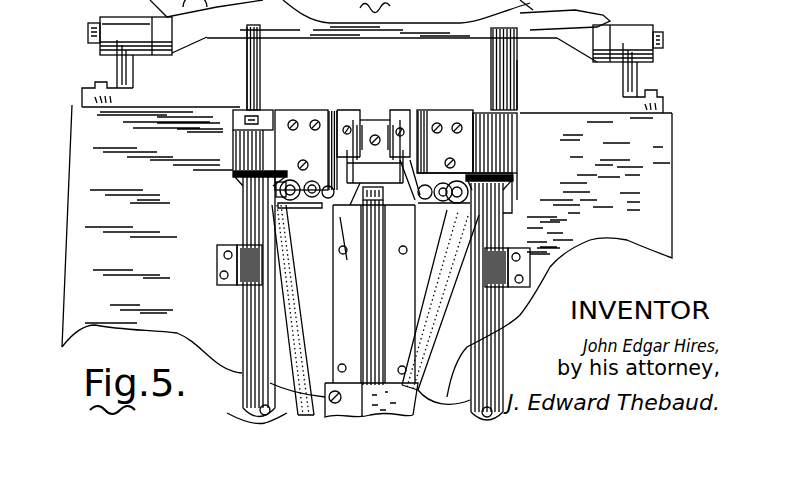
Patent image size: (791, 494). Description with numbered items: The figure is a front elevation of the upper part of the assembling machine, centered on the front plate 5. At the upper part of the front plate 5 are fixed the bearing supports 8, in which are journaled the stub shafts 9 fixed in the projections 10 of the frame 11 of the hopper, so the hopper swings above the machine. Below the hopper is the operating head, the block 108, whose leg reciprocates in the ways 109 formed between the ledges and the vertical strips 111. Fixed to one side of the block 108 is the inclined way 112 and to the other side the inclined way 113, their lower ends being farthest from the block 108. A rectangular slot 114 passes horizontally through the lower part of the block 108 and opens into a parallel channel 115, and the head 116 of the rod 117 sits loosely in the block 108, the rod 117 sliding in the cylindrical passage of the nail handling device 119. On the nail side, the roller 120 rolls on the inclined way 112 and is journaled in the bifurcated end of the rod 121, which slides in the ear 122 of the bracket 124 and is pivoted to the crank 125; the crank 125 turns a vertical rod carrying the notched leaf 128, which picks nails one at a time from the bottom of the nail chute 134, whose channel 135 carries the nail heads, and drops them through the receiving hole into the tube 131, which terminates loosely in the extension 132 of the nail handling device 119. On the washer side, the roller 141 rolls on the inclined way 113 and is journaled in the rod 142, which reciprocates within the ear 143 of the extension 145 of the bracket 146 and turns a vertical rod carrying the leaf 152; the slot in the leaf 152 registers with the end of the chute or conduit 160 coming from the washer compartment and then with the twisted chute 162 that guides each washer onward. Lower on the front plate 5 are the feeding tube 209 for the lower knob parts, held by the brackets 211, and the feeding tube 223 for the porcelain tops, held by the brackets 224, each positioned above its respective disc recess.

The front plate 5 is at (157, 194).
The bearing supports 8 is at (133, 62).
The stub shafts 9 is at (88, 38).
The projections 10 is at (376, 31).
The frame 11 is at (327, 32).
The block 108 is at (375, 151).
The ways 109 is at (388, 116).
The vertical strips 111 is at (403, 127).
The inclined way 112 is at (437, 150).
The inclined way 113 is at (341, 117).
The rectangular slot 114 is at (355, 203).
The channel 115 is at (408, 213).
The head 116 is at (365, 198).
The rod 117 is at (400, 266).
The nail handling device 119 is at (333, 418).
The roller 120 is at (413, 190).
The rod 121 is at (500, 140).
The ear 122 is at (457, 160).
The bracket 124 is at (462, 190).
The crank 125 is at (512, 195).
The leaf 128 is at (485, 118).
The tube 131 is at (440, 307).
The extension 132 is at (428, 400).
The nail chute 134 is at (517, 62).
The channel 135 is at (493, 50).
The roller 141 is at (317, 163).
The rod 142 is at (284, 178).
The ear 143 is at (297, 217).
The extension 145 is at (240, 213).
The bracket 146 is at (243, 150).
The leaf 152 is at (242, 110).
The chute or conduit 160 is at (247, 55).
The chute 162 is at (237, 418).
The feeding tube 209 is at (487, 350).
The brackets 211 is at (523, 260).
The feeding tube 223 is at (270, 312).
The brackets 224 is at (227, 262).